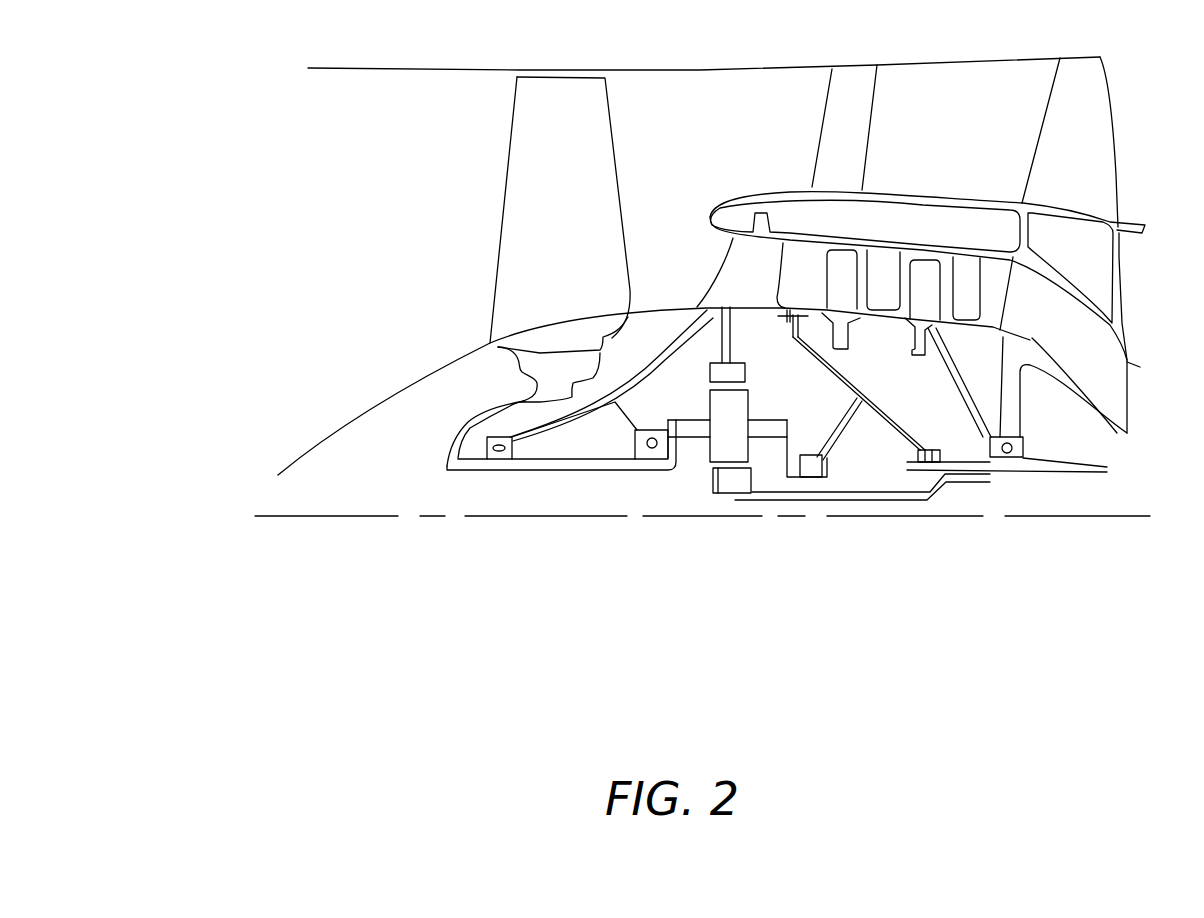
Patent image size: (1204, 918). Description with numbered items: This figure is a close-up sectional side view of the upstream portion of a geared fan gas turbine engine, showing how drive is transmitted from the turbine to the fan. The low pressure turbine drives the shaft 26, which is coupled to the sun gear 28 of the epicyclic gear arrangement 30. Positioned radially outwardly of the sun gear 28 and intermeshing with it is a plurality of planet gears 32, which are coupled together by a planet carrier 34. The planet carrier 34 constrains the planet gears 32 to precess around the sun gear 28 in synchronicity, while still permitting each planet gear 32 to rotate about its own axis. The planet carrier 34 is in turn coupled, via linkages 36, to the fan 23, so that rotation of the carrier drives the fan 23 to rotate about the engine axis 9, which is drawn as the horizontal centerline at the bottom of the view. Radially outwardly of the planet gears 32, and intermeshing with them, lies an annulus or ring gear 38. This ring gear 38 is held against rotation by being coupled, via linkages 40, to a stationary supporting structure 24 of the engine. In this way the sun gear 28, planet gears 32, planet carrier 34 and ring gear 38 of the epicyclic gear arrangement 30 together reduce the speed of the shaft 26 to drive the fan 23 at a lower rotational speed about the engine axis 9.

The engine axis 9 is at (378, 518).
The fan 23 is at (533, 212).
The stationary supporting structure 24 is at (733, 265).
The shaft 26 is at (1000, 470).
The sun gear 28 is at (732, 482).
The epicyclic gear arrangement 30 is at (697, 462).
The planet gears 32 is at (718, 452).
The planet carrier 34 is at (780, 450).
The linkages 36 is at (682, 458).
The ring gear 38 is at (738, 373).
The linkages 40 is at (733, 343).